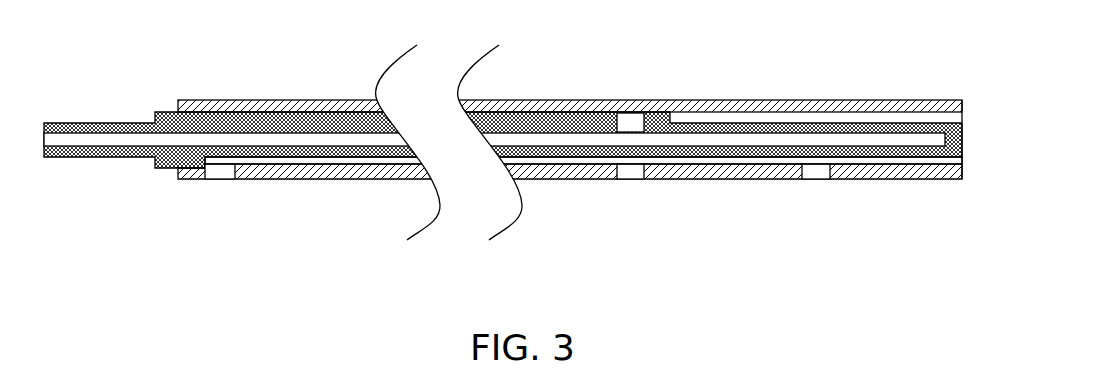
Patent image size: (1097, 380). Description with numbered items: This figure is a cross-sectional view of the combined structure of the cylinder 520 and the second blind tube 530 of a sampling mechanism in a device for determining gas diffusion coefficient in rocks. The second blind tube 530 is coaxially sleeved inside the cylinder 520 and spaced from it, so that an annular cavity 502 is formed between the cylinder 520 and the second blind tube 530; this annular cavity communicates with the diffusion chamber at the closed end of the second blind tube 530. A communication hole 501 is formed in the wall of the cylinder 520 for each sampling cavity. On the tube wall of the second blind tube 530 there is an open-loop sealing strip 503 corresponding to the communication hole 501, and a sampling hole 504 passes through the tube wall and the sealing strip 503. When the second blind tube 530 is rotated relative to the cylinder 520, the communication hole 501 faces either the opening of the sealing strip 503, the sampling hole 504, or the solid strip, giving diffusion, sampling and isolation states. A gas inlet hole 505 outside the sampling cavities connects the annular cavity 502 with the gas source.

The communication hole 501 is at (630, 178).
The annular cavity 502 is at (535, 160).
The sealing strip 503 is at (530, 104).
The sampling hole 504 is at (635, 123).
The gas inlet hole 505 is at (222, 172).
The cylinder 520 is at (868, 172).
The second blind tube 530 is at (882, 127).